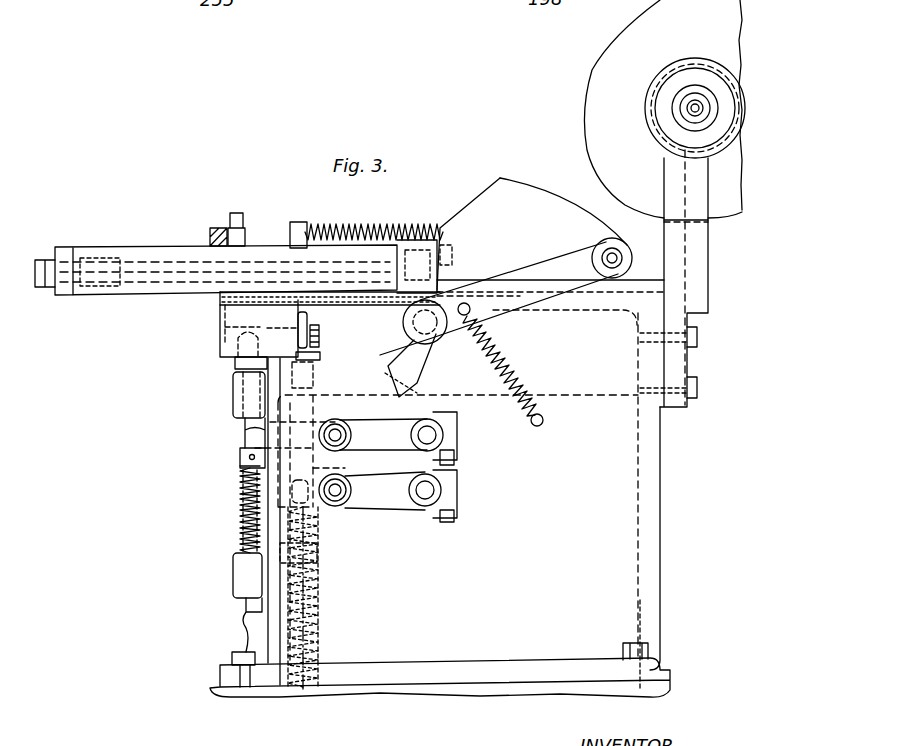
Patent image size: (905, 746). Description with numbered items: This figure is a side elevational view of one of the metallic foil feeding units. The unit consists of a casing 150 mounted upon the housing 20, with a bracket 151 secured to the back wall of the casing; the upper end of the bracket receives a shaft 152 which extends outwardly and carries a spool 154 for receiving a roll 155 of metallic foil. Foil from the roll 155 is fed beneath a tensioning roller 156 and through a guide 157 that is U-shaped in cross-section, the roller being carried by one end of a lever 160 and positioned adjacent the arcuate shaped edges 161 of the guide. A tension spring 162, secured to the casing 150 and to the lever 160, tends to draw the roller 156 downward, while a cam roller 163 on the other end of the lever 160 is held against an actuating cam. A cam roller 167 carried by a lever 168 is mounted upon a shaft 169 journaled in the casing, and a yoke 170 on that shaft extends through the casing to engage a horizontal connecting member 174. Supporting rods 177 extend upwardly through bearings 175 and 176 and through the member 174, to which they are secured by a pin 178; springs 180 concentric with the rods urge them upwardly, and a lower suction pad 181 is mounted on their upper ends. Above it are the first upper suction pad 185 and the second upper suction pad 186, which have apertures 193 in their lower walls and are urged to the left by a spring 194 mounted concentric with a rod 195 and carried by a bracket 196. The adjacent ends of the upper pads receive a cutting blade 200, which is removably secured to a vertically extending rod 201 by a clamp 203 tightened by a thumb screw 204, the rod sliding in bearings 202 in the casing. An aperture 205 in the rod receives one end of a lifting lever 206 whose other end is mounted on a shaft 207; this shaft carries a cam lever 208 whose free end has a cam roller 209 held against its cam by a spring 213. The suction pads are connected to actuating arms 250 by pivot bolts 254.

The housing 20 is at (480, 690).
The casing 150 is at (660, 510).
The bracket 151 is at (708, 262).
The shaft 152 is at (695, 100).
The spool 154 is at (668, 80).
The roll of metallic foil 155 is at (605, 90).
The tensioning roller 156 is at (620, 280).
The guide 157 is at (492, 180).
The lever 160 is at (493, 318).
The arcuate shaped edges 161 is at (550, 168).
The tension spring 162 is at (527, 388).
The cam roller 163 is at (418, 387).
The cam roller 167 is at (345, 420).
The lever 168 is at (392, 428).
The shaft 169 is at (457, 446).
The yoke 170 is at (258, 431).
The horizontal connecting member 174 is at (240, 465).
The bearing 175 is at (233, 592).
The bearing 176 is at (233, 395).
The supporting rods 177 is at (255, 606).
The pin 178 is at (240, 457).
The springs 180 is at (240, 545).
The lower suction pad 181 is at (220, 340).
The first upper suction pad 185 is at (374, 219).
The second upper suction pad 186 is at (180, 248).
The apertures 193 is at (220, 300).
The spring 194 is at (318, 223).
The rod 195 is at (395, 222).
The bracket 196 is at (452, 212).
The cutting blade 200 is at (307, 316).
The clamp 203 is at (320, 337).
The thumb screw 204 is at (320, 356).
The bearings 202 is at (316, 385).
The aperture 205 is at (243, 512).
The lifting lever 206 is at (316, 463).
The shaft 207 is at (425, 498).
The cam lever 208 is at (460, 505).
The cam roller 209 is at (345, 488).
The vertically extending rod 201 is at (325, 548).
The spring 213 is at (318, 640).
The actuating arms 250 is at (217, 228).
The pivot bolts 254 is at (250, 224).